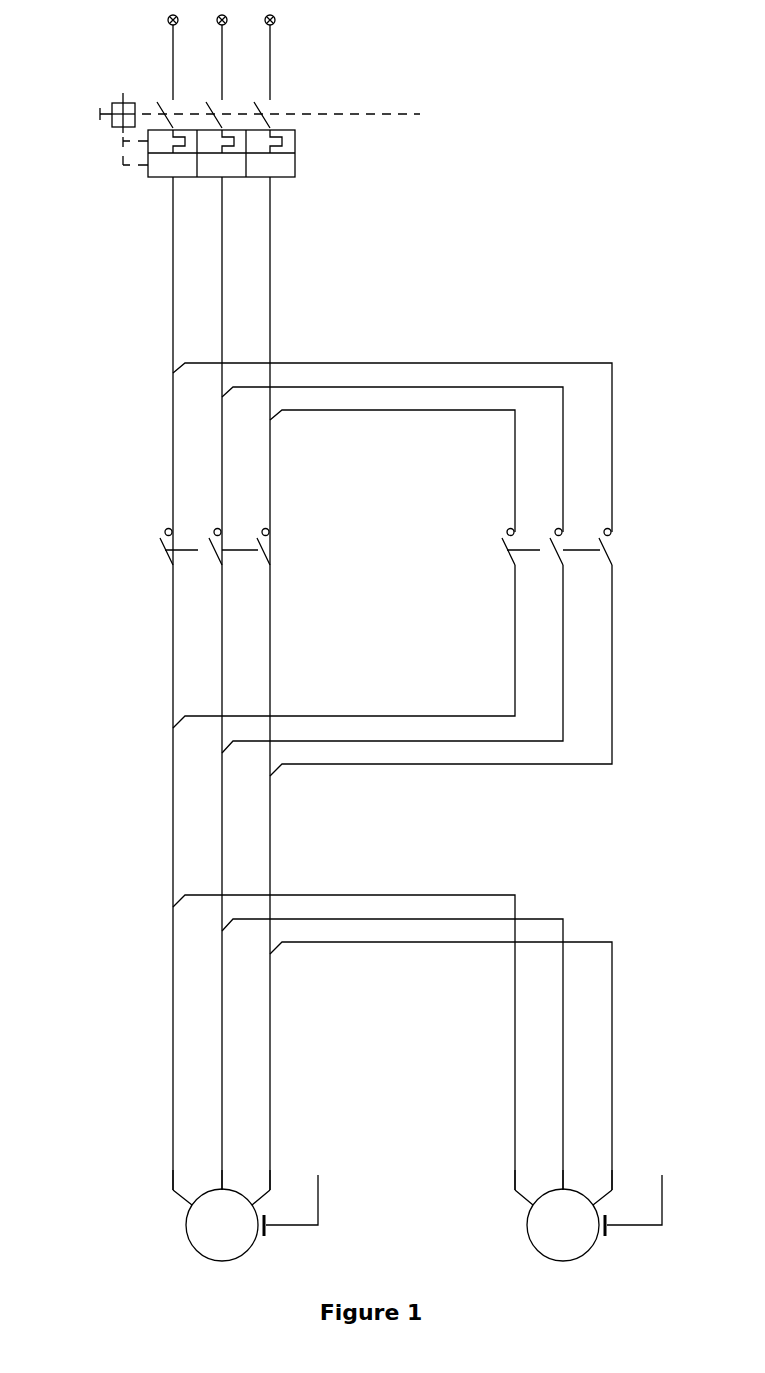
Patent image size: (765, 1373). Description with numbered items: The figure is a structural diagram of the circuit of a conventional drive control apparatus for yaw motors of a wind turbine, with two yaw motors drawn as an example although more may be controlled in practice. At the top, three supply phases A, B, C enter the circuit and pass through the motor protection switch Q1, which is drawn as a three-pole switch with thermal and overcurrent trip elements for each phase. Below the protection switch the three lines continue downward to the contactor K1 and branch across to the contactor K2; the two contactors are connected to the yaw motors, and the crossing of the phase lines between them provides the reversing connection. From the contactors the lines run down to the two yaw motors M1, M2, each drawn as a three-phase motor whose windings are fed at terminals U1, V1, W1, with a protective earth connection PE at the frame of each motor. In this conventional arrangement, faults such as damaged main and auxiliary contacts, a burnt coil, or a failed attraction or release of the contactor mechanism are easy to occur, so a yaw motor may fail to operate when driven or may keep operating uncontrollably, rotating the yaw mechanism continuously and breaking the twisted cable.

The supply phase A is at (152, 57).
The supply phase B is at (201, 57).
The supply phase C is at (250, 57).
The motor protection switch Q1 is at (235, 135).
The contactor K1 is at (191, 547).
The contactor K2 is at (532, 547).
The first three-phase motor M1 is at (191, 1225).
The second three-phase motor M2 is at (532, 1225).
The motor terminal U1 is at (357, 1180).
The motor terminal V1 is at (406, 1180).
The motor terminal W1 is at (457, 1180).
The protective earth connection PE is at (475, 1203).